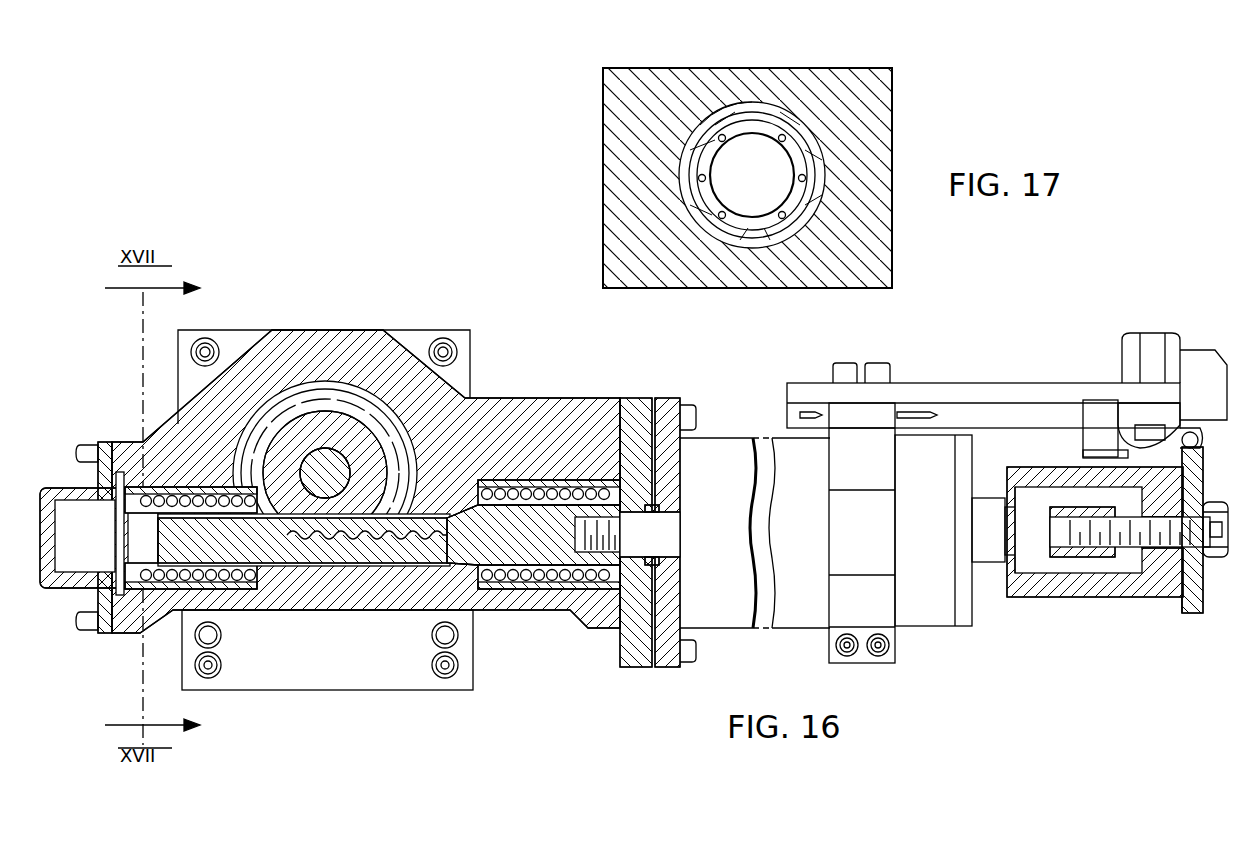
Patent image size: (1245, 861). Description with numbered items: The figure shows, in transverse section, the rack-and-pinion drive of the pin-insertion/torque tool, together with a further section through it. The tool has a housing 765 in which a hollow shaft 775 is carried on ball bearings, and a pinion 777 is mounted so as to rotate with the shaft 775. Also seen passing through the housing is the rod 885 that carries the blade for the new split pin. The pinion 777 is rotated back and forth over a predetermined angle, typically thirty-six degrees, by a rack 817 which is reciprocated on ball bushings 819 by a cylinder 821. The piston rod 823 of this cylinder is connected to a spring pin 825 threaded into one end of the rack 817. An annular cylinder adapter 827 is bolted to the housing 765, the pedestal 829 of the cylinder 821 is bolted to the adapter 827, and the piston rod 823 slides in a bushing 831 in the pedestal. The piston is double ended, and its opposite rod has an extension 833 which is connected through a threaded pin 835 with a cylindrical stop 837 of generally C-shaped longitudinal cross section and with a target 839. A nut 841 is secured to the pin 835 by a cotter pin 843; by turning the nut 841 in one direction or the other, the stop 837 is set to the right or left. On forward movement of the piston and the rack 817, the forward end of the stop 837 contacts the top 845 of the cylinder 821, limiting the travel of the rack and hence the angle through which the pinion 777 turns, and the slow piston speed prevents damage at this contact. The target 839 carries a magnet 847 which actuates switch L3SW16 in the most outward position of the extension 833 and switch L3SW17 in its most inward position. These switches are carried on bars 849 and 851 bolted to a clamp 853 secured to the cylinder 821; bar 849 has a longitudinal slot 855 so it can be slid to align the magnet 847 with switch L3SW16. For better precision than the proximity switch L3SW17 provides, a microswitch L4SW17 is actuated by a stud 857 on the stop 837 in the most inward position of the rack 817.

In FIG. 17, the housing 765 is at (622, 152).
In FIG. 16, the housing 765 is at (350, 360).
In FIG. 16, the hollow shaft 775 is at (305, 410).
In FIG. 16, the pinion 777 is at (282, 430).
In FIG. 16, the rod 885 is at (362, 440).
In FIG. 17, the rack 817 is at (749, 147).
In FIG. 16, the rack 817 is at (420, 563).
In FIG. 17, the ball bushings 819 is at (702, 195).
In FIG. 16, the ball bushings 819 is at (238, 596).
In FIG. 16, the cylinder 821 is at (740, 425).
In FIG. 16, the piston rod 823 is at (680, 551).
In FIG. 16, the spring pin 825 is at (620, 524).
In FIG. 16, the annular cylinder adapter 827 is at (636, 660).
In FIG. 16, the pedestal 829 is at (668, 660).
In FIG. 16, the bushing 831 is at (676, 566).
In FIG. 16, the extension 833 is at (1027, 573).
In FIG. 16, the threaded pin 835 is at (1164, 548).
In FIG. 16, the cylindrical stop 837 is at (1115, 597).
In FIG. 16, the target 839 is at (1192, 613).
In FIG. 16, the nut 841 is at (1210, 520).
In FIG. 16, the cotter pin 843 is at (1218, 560).
In FIG. 16, the top of cylinder 845 is at (976, 626).
In FIG. 16, the magnet 847 is at (1140, 442).
In FIG. 16, the bar 849 is at (1226, 405).
In FIG. 16, the bar 851 is at (950, 388).
In FIG. 16, the clamp 853 is at (886, 625).
In FIG. 16, the longitudinal slot 855 is at (820, 418).
In FIG. 16, the stud 857 is at (1130, 516).
In FIG. 16, the switch L3SW16 is at (1190, 432).
In FIG. 16, the switch L3SW17 is at (1085, 403).
In FIG. 16, the microswitch L4SW17 is at (1090, 456).